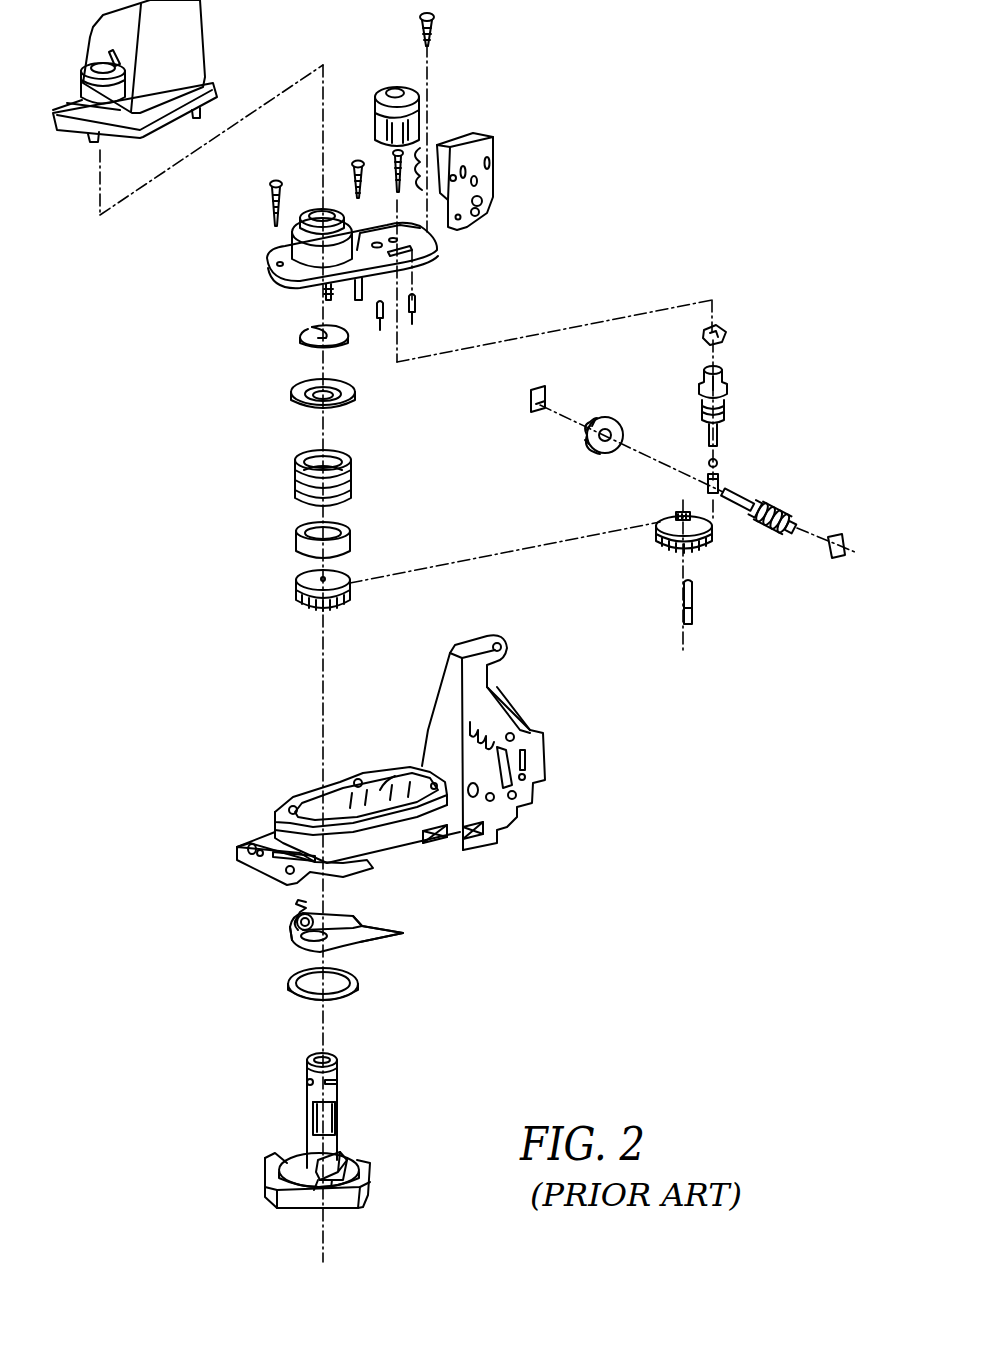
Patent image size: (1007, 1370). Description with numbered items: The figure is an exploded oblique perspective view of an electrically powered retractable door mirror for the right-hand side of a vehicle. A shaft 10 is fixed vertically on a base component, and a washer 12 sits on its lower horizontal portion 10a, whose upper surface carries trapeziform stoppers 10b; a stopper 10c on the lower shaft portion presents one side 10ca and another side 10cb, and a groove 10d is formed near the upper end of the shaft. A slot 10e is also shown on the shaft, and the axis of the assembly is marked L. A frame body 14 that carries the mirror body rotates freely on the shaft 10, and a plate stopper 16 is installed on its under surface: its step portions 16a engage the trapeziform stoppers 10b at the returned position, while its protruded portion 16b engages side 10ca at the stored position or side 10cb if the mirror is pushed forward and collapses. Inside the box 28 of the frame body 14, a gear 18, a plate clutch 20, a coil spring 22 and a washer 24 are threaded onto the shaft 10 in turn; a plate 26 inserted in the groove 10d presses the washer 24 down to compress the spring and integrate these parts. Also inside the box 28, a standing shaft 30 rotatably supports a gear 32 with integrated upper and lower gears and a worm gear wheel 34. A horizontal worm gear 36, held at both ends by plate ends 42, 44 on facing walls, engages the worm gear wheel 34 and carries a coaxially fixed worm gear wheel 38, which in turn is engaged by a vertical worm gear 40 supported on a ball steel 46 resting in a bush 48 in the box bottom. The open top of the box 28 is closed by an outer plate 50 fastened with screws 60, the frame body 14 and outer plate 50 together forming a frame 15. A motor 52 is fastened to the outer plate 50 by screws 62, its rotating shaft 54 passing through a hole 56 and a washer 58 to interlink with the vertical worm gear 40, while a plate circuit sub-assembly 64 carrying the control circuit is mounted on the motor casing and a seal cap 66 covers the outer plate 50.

The shaft 10 is at (305, 1070).
The lower horizontal portion 10a is at (278, 1168).
The trapeziform stoppers 10b is at (304, 1150).
The stopper 10c is at (331, 1188).
The one side of stopper 10ca is at (342, 1160).
The other side of stopper 10cb is at (314, 1190).
The groove 10d is at (307, 1078).
The spindle slot 10e is at (312, 1116).
The washer 12 is at (296, 992).
The frame body 14 is at (272, 832).
The frame 15 is at (272, 286).
The plate stopper 16 is at (290, 940).
The step portions 16a is at (372, 940).
The protruded portion 16b is at (300, 914).
The gear 18 is at (300, 596).
The plate clutch 20 is at (302, 550).
The coil spring 22 is at (300, 480).
The washer 24 is at (300, 388).
The plate 26 is at (305, 330).
The box 28 is at (392, 782).
The shaft 30 is at (694, 608).
The gear 32 is at (678, 516).
The worm gear wheel 34 is at (710, 538).
The horizontal worm gear 36 is at (792, 514).
The worm gear wheel 38 is at (588, 438).
The vertical worm gear 40 is at (722, 412).
The plate end 42 is at (531, 406).
The plate end 44 is at (842, 556).
The ball steel 46 is at (718, 462).
The bush 48 is at (720, 486).
The outer plate 50 is at (288, 268).
The motor 52 is at (425, 120).
The rotating shaft 54 is at (400, 160).
The hole 56 is at (440, 248).
The washer 58 is at (718, 326).
The screws 60 is at (366, 80).
The screws 62 is at (420, 302).
The plate circuit sub-assembly 64 is at (500, 186).
The seal cap 66 is at (178, 42).
The axis L is at (338, 1028).